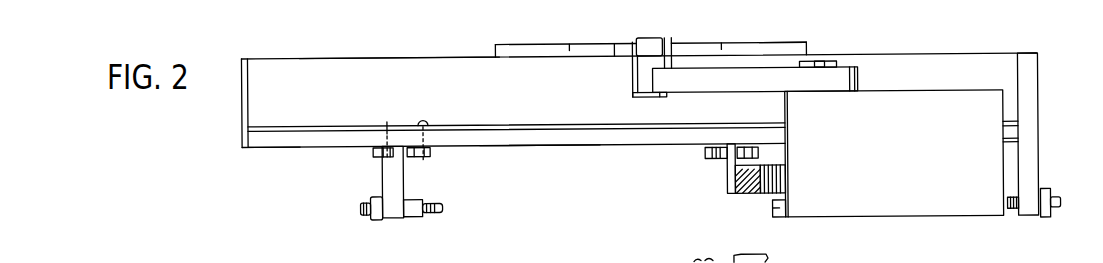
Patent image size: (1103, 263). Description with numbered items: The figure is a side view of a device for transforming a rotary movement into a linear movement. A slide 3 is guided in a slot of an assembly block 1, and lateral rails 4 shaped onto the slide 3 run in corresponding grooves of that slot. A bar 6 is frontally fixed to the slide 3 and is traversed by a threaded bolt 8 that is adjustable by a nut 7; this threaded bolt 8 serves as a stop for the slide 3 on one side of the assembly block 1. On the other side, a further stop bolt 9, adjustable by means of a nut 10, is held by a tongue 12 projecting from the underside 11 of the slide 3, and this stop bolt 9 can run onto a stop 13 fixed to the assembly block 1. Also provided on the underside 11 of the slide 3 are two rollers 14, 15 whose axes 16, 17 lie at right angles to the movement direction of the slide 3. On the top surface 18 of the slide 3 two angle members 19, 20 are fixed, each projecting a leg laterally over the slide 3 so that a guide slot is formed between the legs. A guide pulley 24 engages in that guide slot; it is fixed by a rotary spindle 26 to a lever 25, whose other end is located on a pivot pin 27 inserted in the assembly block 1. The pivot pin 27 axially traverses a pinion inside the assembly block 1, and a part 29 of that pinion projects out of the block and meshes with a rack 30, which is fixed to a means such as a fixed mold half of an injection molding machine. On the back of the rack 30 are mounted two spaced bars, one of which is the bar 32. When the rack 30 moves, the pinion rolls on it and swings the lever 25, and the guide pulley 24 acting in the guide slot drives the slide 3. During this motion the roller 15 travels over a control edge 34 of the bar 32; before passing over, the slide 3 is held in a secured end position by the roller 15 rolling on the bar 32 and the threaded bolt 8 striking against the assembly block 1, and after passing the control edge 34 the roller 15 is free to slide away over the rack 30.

The assembly block 1 is at (980, 137).
The slide 3 is at (418, 75).
The lateral rails 4 is at (292, 128).
The bar 6 is at (1030, 78).
The nut 7 is at (1042, 193).
The threaded bolt 8 is at (1060, 205).
The stop bolt 9 is at (363, 204).
The nut 10 is at (371, 221).
The underside 11 is at (528, 146).
The tongue 12 is at (393, 206).
The stop 13 is at (773, 210).
The roller 14 is at (421, 157).
The roller 15 is at (703, 152).
The axis 16 is at (445, 138).
The axis 17 is at (721, 145).
The top surface 18 is at (364, 57).
The angle member 19 is at (504, 52).
The angle member 20 is at (800, 50).
The guide pulley 24 is at (640, 48).
The lever 25 is at (858, 78).
The rotary spindle 26 is at (640, 90).
The pivot pin 27 is at (832, 63).
The part of pinion 29 is at (787, 178).
The rack 30 is at (742, 195).
The bar 32 is at (728, 175).
The control edge 34 is at (733, 145).